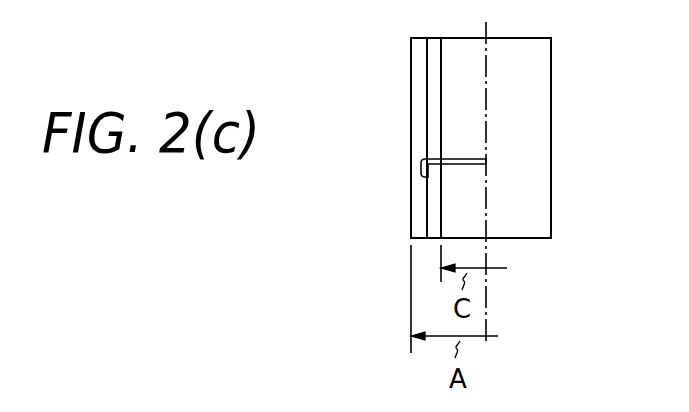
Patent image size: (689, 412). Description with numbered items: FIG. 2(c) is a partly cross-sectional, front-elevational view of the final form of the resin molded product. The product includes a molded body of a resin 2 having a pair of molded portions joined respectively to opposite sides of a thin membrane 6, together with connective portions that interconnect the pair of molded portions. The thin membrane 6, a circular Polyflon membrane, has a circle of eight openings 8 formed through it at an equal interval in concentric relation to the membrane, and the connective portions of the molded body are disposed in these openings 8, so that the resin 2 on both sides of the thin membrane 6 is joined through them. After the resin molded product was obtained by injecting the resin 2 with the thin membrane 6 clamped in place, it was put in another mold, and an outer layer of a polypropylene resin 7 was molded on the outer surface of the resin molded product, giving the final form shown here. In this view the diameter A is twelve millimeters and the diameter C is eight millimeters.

The resin 2 is at (432, 80).
The thin membrane 6 is at (467, 157).
The outer layer of polypropylene resin 7 is at (416, 208).
The openings 8 is at (437, 157).